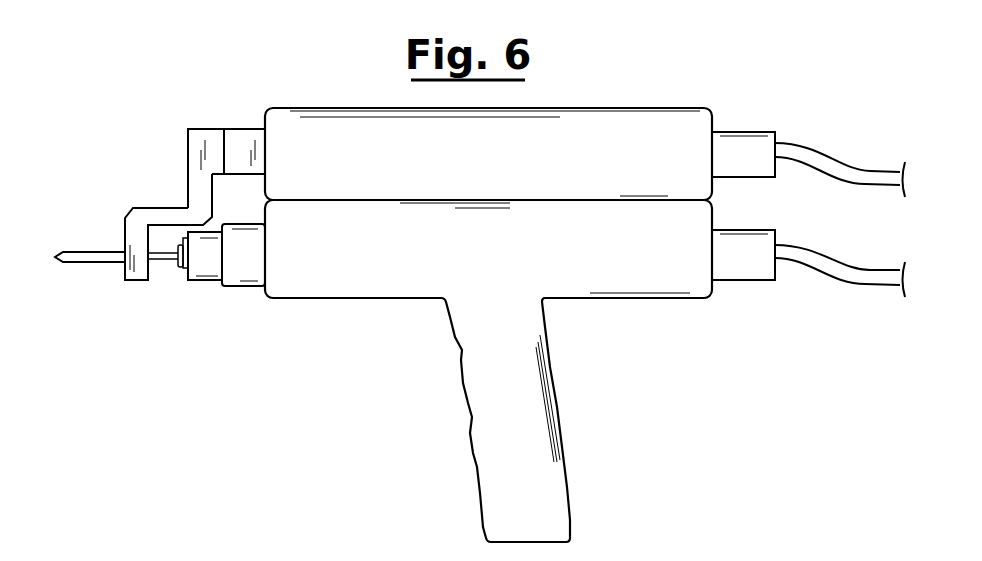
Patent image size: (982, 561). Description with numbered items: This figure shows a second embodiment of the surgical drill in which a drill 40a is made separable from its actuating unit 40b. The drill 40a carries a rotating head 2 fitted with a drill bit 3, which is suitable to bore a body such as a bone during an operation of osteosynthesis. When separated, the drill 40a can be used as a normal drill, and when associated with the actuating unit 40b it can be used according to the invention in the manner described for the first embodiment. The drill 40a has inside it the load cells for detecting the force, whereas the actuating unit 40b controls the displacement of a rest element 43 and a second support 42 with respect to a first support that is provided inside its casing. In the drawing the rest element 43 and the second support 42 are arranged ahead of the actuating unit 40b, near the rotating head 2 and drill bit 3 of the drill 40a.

The rotating head 2 is at (230, 268).
The drill bit 3 is at (128, 265).
The drill 40a is at (418, 273).
The actuating unit 40b is at (643, 122).
The second support 42 is at (239, 143).
The rest element 43 is at (205, 143).